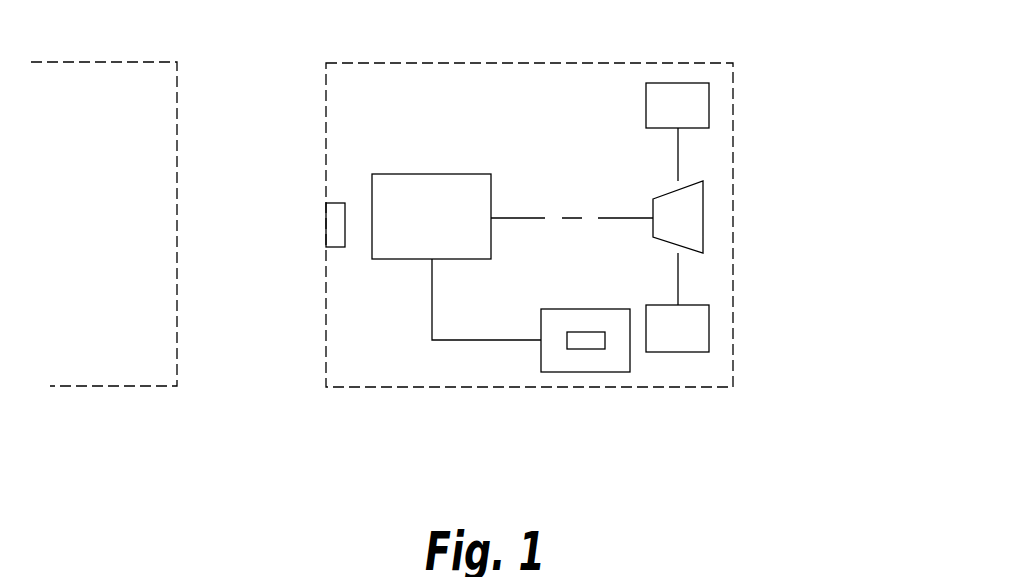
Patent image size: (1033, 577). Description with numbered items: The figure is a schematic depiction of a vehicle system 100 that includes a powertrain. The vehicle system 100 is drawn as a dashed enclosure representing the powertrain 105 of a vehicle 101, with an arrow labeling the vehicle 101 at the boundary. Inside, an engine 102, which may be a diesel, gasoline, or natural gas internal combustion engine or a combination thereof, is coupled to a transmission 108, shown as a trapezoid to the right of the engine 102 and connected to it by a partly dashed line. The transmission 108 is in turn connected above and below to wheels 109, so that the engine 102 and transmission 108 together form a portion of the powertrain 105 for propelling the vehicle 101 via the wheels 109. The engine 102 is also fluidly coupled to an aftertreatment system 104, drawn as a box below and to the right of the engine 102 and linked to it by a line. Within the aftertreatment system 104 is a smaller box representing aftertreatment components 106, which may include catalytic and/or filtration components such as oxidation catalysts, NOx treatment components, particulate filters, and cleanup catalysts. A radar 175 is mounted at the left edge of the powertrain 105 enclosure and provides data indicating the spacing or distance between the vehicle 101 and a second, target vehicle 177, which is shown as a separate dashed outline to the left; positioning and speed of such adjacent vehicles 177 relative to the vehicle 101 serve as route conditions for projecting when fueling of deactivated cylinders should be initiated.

The vehicle system 100 is at (880, 218).
The vehicle 101 is at (734, 349).
The engine 102 is at (451, 229).
The aftertreatment system 104 is at (553, 372).
The powertrain 105 is at (548, 164).
The aftertreatment components 106 is at (594, 349).
The transmission 108 is at (705, 211).
The wheels 109 is at (694, 97).
The radar 175 is at (331, 222).
The target vehicle 177 is at (150, 127).